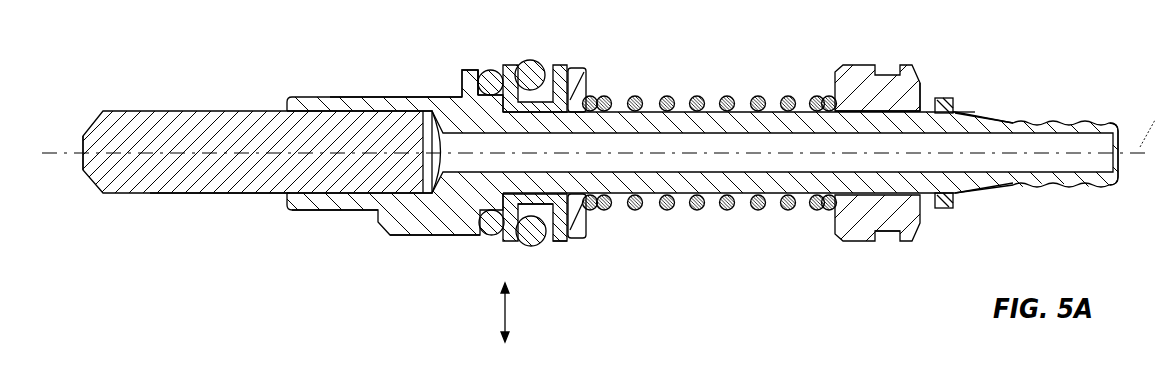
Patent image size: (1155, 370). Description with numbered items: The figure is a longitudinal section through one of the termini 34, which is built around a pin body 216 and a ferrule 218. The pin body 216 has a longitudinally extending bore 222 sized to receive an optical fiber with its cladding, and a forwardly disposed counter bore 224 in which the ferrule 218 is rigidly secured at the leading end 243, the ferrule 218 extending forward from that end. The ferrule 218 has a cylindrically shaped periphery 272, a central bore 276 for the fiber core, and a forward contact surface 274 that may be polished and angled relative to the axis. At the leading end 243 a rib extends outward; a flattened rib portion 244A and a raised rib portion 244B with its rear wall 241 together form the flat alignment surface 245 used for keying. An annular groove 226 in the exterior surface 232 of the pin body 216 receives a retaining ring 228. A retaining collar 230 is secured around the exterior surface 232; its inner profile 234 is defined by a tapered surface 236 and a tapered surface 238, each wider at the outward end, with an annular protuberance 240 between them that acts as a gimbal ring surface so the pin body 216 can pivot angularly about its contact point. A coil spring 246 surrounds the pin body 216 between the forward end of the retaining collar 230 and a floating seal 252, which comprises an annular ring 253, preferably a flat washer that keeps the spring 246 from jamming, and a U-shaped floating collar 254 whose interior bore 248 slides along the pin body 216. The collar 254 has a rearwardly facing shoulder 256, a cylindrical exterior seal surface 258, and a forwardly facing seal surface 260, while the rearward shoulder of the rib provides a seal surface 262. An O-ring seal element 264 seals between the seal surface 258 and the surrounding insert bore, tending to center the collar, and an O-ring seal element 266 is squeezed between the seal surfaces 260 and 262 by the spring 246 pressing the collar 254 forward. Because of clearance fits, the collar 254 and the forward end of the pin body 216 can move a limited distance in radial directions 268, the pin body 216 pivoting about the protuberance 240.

The termini 34 is at (88, 73).
The pin body 216 is at (996, 145).
The ferrule 218 is at (262, 137).
The bore 222 is at (810, 160).
The counter bore 224 is at (374, 148).
The annular groove 226 is at (985, 91).
The retaining ring 228 is at (973, 125).
The retaining collar 230 is at (851, 146).
The exterior surface 232 is at (1040, 178).
The inner profile 234 is at (847, 87).
The tapered surface 236 is at (710, 213).
The tapered surface 238 is at (952, 63).
The protuberance 240 is at (917, 254).
The rear wall 241 is at (456, 85).
The leading end 243 is at (310, 233).
The flattened rib portion 244A is at (399, 244).
The raised rib portion 244B is at (437, 74).
The alignment surface 245 is at (387, 73).
The coil spring 246 is at (710, 86).
The interior bore 248 is at (585, 253).
The floating seal 252 is at (562, 68).
The annular ring 253 is at (577, 220).
The floating collar 254 is at (595, 144).
The rearwardly facing shoulder 256 is at (549, 261).
The seal surface 258 is at (524, 51).
The forwardly facing seal surface 260 is at (478, 53).
The seal surface 262 is at (448, 61).
The O-ring seal element 264 is at (550, 243).
The O-ring seal element 266 is at (466, 236).
The radial directions 268 is at (475, 312).
The cylindrically shaped periphery 272 is at (220, 209).
The forward contact surface 274 is at (47, 145).
The central bore 276 is at (103, 155).